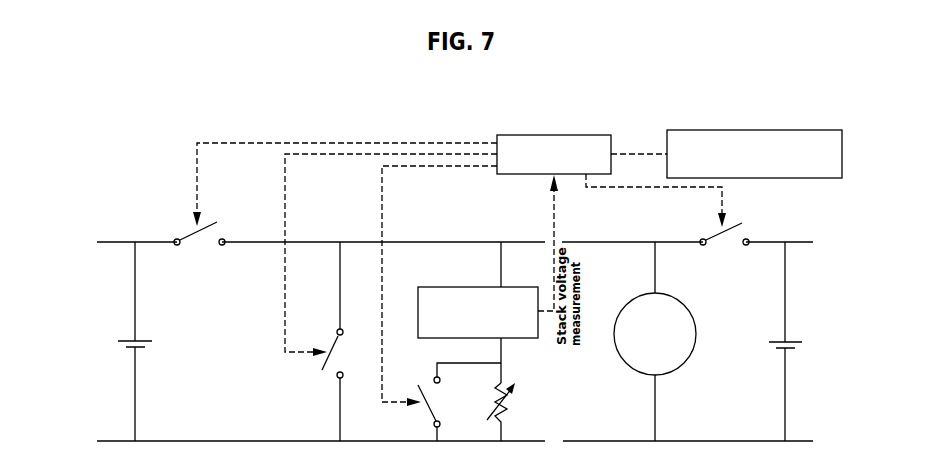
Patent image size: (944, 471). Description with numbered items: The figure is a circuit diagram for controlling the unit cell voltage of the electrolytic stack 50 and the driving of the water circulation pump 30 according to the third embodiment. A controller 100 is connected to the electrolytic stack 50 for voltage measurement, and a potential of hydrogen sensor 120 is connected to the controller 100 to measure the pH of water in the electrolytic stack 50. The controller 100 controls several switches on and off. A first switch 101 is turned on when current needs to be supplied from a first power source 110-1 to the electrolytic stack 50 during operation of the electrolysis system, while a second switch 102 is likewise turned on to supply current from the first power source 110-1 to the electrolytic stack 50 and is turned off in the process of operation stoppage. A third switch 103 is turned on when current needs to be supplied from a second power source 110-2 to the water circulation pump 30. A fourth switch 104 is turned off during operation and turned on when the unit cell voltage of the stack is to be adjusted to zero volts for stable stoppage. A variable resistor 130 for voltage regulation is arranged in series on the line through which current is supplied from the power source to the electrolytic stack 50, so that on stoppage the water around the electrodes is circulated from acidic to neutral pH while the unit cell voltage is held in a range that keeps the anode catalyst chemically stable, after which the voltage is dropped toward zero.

The controller 100 is at (548, 135).
The potential of hydrogen (pH) sensor 120 is at (746, 130).
The first switch 101 is at (209, 221).
The second switch 102 is at (421, 388).
The third switch 103 is at (718, 234).
The fourth switch 104 is at (325, 362).
The electrolytic stack 50 is at (464, 286).
The variable resistor 130 is at (518, 401).
The water circulation pump 30 is at (689, 304).
The first power source 110-1 is at (125, 339).
The second power source 110-2 is at (799, 338).